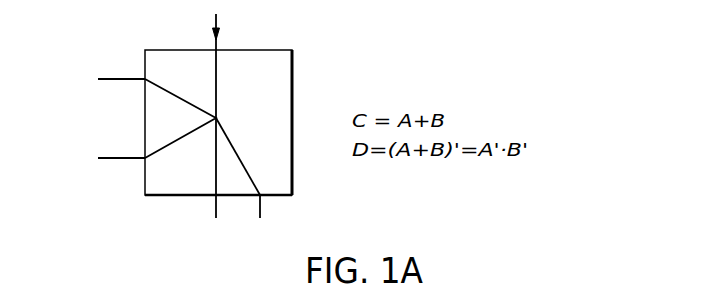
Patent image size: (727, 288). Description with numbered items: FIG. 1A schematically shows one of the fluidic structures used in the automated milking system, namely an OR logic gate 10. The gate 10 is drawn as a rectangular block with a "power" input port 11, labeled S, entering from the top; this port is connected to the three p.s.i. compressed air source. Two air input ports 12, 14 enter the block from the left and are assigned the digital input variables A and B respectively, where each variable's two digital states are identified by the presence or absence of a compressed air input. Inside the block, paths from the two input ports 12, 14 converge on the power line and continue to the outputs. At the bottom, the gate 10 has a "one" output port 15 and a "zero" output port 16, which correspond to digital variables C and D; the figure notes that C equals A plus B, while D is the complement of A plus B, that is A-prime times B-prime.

The OR logic gate 10 is at (293, 100).
The power input port 11 is at (216, 23).
The air input port 12 is at (140, 78).
The air input port 14 is at (136, 160).
The output port 15 is at (260, 218).
The output port 16 is at (213, 217).